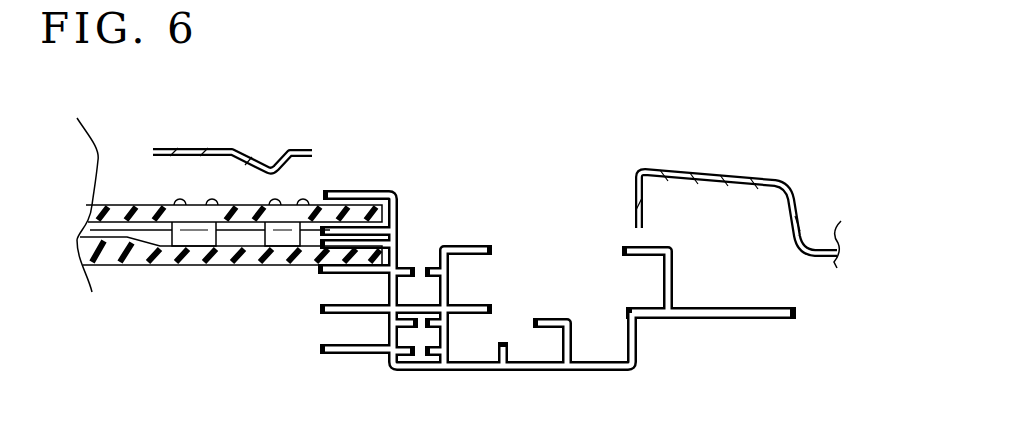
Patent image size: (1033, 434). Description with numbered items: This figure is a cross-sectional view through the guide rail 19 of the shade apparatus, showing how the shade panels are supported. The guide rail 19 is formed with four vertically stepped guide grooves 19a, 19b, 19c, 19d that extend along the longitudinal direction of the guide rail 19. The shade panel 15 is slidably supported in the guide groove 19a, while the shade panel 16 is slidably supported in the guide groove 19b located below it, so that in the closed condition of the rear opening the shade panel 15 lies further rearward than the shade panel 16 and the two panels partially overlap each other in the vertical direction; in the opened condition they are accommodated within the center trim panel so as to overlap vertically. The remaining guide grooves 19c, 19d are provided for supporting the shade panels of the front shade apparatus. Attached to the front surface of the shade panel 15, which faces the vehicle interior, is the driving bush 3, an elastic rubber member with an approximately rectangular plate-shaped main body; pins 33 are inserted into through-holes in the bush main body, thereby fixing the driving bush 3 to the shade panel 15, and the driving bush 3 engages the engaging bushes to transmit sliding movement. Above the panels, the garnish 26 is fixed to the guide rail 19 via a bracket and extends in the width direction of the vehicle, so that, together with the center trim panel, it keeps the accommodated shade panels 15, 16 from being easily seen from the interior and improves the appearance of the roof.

The driving bush 3 is at (237, 262).
The shade panel 15 is at (117, 212).
The shade panel 16 is at (115, 248).
The guide rail 19 is at (665, 350).
The guide groove 19a is at (404, 211).
The guide groove 19b is at (402, 253).
The guide groove 19c is at (333, 303).
The guide groove 19d is at (351, 343).
The garnish 26 is at (212, 150).
The pin 33 is at (170, 253).